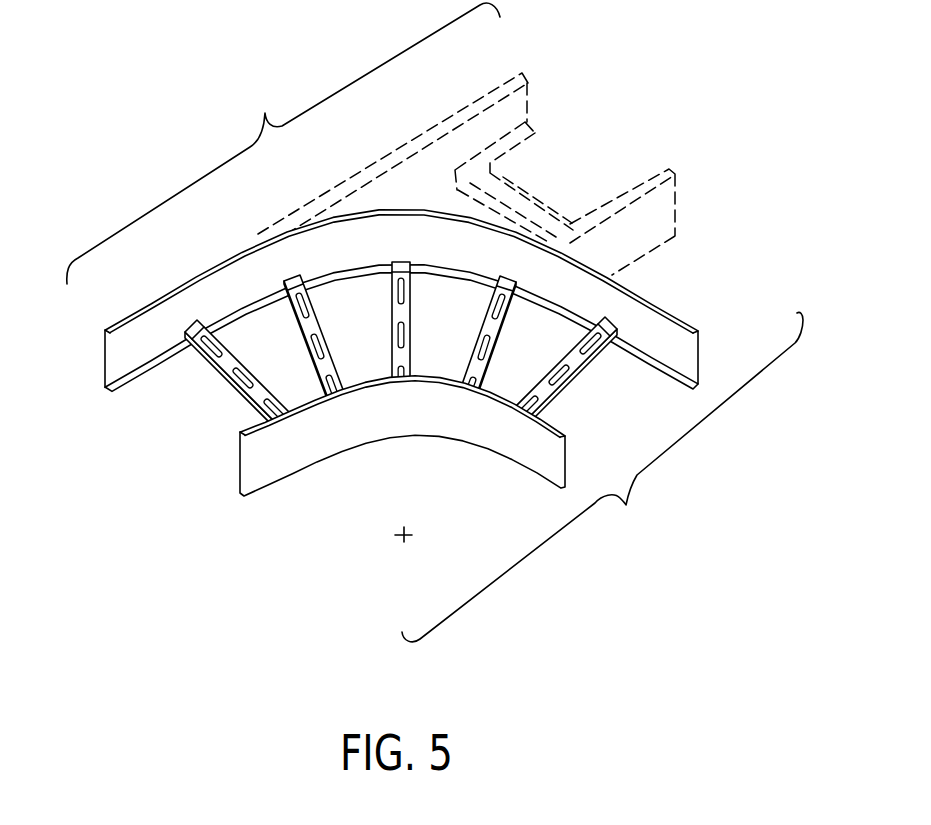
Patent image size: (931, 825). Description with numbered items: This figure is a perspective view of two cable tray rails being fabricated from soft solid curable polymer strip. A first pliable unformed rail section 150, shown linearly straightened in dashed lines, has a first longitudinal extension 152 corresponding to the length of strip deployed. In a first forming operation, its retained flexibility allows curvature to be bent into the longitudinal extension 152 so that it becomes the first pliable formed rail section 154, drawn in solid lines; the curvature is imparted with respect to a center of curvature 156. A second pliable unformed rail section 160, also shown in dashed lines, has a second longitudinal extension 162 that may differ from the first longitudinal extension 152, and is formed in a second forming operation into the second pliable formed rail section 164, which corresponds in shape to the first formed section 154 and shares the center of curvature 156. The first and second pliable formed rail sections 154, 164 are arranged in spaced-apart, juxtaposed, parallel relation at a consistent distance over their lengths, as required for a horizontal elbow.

The first pliable unformed rail section 150 is at (404, 370).
The first longitudinal extension 152 is at (283, 143).
The first pliable formed rail section 154 is at (665, 333).
The center of curvature 156 is at (402, 538).
The second pliable unformed rail section 160 is at (287, 463).
The second longitudinal extension 162 is at (602, 476).
The second pliable formed rail section 164 is at (485, 435).